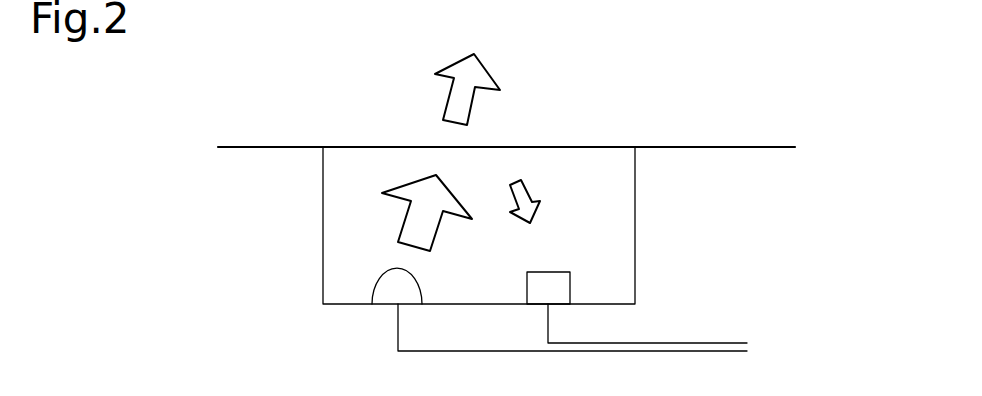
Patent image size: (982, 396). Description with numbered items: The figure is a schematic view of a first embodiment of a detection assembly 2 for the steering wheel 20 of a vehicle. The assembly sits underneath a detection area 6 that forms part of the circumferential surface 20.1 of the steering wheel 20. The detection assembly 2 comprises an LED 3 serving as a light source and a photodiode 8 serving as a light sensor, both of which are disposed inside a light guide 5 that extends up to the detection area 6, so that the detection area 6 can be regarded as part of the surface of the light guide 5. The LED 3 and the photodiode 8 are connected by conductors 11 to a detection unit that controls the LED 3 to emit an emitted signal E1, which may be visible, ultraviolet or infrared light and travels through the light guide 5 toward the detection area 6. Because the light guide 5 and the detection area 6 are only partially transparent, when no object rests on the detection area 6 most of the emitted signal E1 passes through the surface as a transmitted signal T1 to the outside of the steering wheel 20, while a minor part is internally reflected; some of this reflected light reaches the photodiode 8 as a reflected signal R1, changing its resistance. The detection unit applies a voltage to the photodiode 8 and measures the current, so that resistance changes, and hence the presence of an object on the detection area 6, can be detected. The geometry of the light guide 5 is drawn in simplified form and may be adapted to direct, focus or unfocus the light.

The circumferential surface 20.1 is at (262, 137).
The steering wheel 20 is at (260, 208).
The detection assembly 2 is at (667, 168).
The detection area 6 is at (420, 147).
The light guide 5 is at (583, 216).
The LED 3 is at (378, 276).
The photodiode 8 is at (570, 278).
The conductors 11 is at (672, 343).
The emitted signal E1 is at (378, 193).
The transmitted signal T1 is at (503, 85).
The reflected signal R1 is at (533, 178).